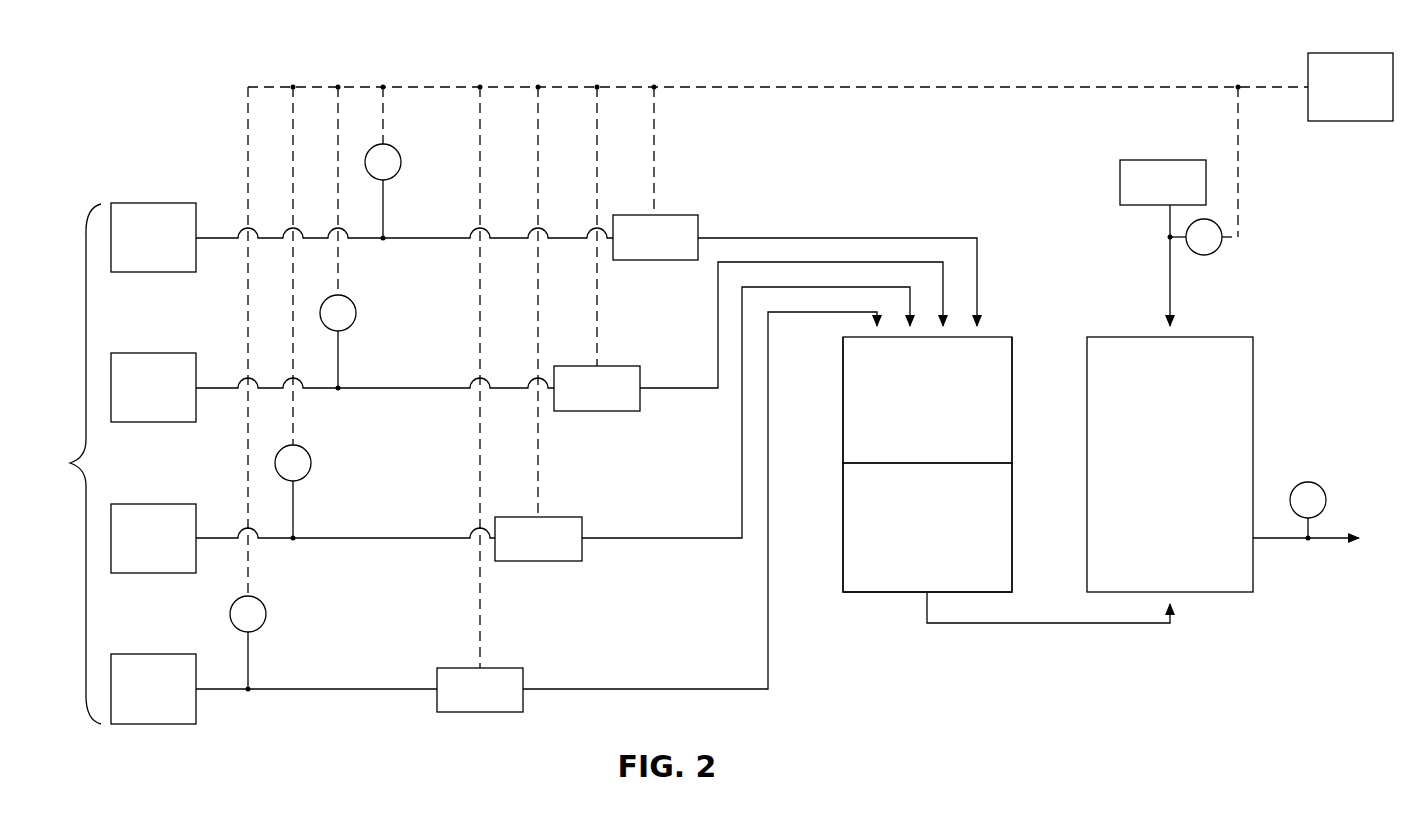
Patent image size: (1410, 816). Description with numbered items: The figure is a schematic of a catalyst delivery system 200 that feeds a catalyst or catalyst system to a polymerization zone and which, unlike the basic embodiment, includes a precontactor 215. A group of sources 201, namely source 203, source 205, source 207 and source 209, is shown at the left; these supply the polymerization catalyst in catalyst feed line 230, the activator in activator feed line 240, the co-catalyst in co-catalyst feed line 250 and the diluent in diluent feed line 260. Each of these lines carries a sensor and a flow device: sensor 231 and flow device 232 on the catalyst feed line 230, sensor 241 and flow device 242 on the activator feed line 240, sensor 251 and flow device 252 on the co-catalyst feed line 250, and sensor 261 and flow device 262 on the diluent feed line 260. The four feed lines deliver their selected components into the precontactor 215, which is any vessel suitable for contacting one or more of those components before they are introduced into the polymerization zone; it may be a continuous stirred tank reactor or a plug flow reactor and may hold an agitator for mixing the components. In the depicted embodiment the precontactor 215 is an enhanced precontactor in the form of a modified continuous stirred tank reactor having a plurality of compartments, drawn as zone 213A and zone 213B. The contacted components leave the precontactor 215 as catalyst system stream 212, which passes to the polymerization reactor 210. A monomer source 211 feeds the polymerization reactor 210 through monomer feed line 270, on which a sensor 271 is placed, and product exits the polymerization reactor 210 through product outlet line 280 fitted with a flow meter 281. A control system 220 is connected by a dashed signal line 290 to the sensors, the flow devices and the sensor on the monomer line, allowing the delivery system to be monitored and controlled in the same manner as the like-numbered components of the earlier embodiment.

The catalyst delivery system 200 is at (166, 60).
The sources 201 is at (60, 464).
The source 203 is at (132, 253).
The source 205 is at (132, 403).
The source 207 is at (132, 554).
The source 209 is at (132, 704).
The polymerization reactor 210 is at (1148, 477).
The monomer source 211 is at (1141, 197).
The catalyst system stream 212 is at (1049, 627).
The zone 213A is at (957, 414).
The zone 213B is at (957, 543).
The precontactor 215 is at (878, 595).
The control system 220 is at (1328, 101).
The catalyst feed line 230 is at (420, 236).
The sensor 231 is at (396, 150).
The flow device 232 is at (633, 252).
The activator feed line 240 is at (388, 386).
The sensor 241 is at (351, 302).
The flow device 242 is at (575, 403).
The co-catalyst feed line 250 is at (353, 536).
The sensor 251 is at (306, 452).
The flow device 252 is at (516, 553).
The diluent feed line 260 is at (327, 687).
The sensor 261 is at (261, 603).
The flow device 262 is at (458, 704).
The monomer feed line 270 is at (1172, 278).
The sensor 271 is at (1216, 250).
The product outlet line 280 is at (1328, 542).
The flow meter 281 is at (1320, 487).
The signal line 290 is at (718, 84).